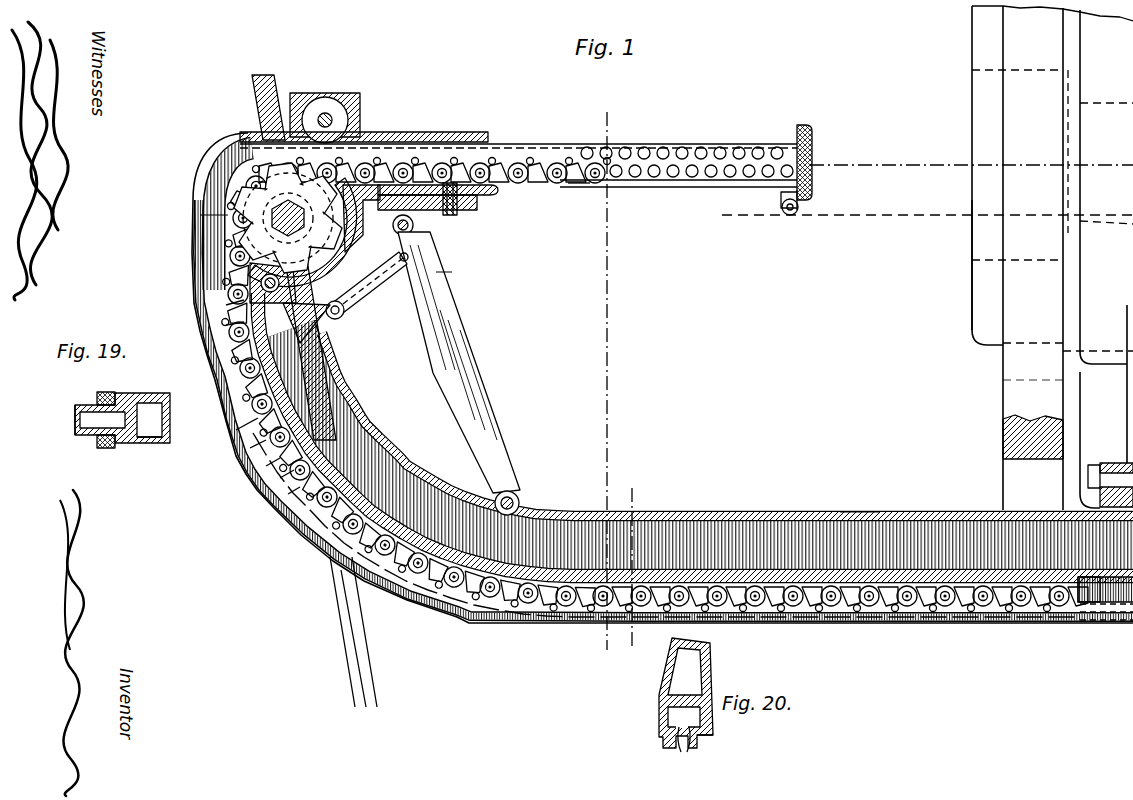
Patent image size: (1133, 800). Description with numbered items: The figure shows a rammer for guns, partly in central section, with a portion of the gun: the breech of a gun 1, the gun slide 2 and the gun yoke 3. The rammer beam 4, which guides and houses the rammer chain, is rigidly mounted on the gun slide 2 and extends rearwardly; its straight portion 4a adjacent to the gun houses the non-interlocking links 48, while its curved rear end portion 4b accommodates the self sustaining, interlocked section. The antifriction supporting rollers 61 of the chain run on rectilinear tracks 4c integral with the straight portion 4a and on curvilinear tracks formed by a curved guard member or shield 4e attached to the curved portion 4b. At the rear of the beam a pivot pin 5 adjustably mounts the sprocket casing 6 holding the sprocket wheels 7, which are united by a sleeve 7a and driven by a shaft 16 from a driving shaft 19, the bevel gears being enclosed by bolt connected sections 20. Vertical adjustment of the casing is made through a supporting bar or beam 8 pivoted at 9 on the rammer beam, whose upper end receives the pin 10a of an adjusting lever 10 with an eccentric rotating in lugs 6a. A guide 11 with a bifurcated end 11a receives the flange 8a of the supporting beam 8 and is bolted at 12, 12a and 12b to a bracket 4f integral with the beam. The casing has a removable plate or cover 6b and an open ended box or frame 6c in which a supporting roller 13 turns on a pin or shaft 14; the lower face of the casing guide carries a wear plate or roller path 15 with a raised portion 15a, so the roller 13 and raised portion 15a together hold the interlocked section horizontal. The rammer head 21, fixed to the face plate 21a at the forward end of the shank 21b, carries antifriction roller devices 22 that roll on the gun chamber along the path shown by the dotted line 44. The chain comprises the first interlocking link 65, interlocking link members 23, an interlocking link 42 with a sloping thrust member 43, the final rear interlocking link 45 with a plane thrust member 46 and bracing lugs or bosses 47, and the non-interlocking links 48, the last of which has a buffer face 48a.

In FIG. 1, the breech of a gun 1 is at (972, 298).
In FIG. 1, the gun slide 2 is at (1127, 392).
In FIG. 1, the gun yoke 3 is at (1003, 388).
In FIG. 1, the rammer beam 4 is at (862, 513).
In FIG. 19, the rammer beam 4 is at (150, 393).
In FIG. 20, the rammer beam 4 is at (659, 700).
In FIG. 1, the dotted line 44 is at (910, 216).
In FIG. 19, the straight portion 4a is at (107, 392).
In FIG. 20, the straight portion 4a is at (714, 727).
In FIG. 1, the curved rear end portion 4b is at (392, 480).
In FIG. 19, the curved rear end portion 4b is at (150, 444).
In FIG. 1, the rectilinear tracks 4c is at (1110, 604).
In FIG. 20, the rectilinear tracks 4c is at (684, 754).
In FIG. 1, the curved guard member or shield 4e is at (312, 530).
In FIG. 19, the curved guard member or shield 4e is at (75, 420).
In FIG. 1, the bracket 4f is at (320, 322).
In FIG. 1, the pivot pin 5 is at (282, 284).
In FIG. 1, the sprocket casing 6 is at (350, 240).
In FIG. 1, the lugs 6a is at (445, 132).
In FIG. 1, the removable plate or cover 6b is at (200, 200).
In FIG. 1, the open ended box or frame 6c is at (362, 115).
In FIG. 1, the sprocket wheels 7 is at (348, 258).
In FIG. 1, the sleeve 7a is at (200, 215).
In FIG. 1, the supporting bar or beam 8 is at (470, 385).
In FIG. 1, the flange 8a is at (440, 280).
In FIG. 1, the pivot 9 is at (514, 494).
In FIG. 1, the adjusting lever 10 is at (458, 208).
In FIG. 1, the pin 10a is at (414, 228).
In FIG. 1, the guide 11 is at (398, 298).
In FIG. 1, the bifurcated end 11a is at (418, 262).
In FIG. 1, the bolt 12 is at (345, 315).
In FIG. 1, the bolt 12a is at (226, 305).
In FIG. 1, the bolt 12b is at (226, 325).
In FIG. 1, the supporting roller 13 is at (330, 113).
In FIG. 1, the pin or shaft 14 is at (323, 108).
In FIG. 1, the wear plate or roller path 15 is at (478, 203).
In FIG. 1, the raised portion 15a is at (499, 190).
In FIG. 1, the shaft 16 is at (288, 218).
In FIG. 1, the driving shaft 19 is at (258, 98).
In FIG. 1, the bolt connected sections 20 is at (635, 571).
In FIG. 1, the rammer head 21 is at (811, 162).
In FIG. 1, the face plate 21a is at (798, 128).
In FIG. 1, the shank 21b is at (702, 182).
In FIG. 1, the antifriction roller devices 22 is at (787, 217).
In FIG. 1, the interlocking link members 23 is at (520, 165).
In FIG. 1, the interlocking link 42 is at (240, 435).
In FIG. 1, the thrust member 43 is at (252, 447).
In FIG. 1, the final rear interlocking link 45 is at (270, 465).
In FIG. 1, the thrust member 46 is at (284, 478).
In FIG. 1, the lugs or bosses 47 is at (290, 494).
In FIG. 1, the non-interlocking links 48 is at (330, 546).
In FIG. 1, the buffer face 48a is at (1070, 605).
In FIG. 1, the antifriction supporting roller 61 is at (455, 603).
In FIG. 1, the first interlocking link 65 is at (578, 183).